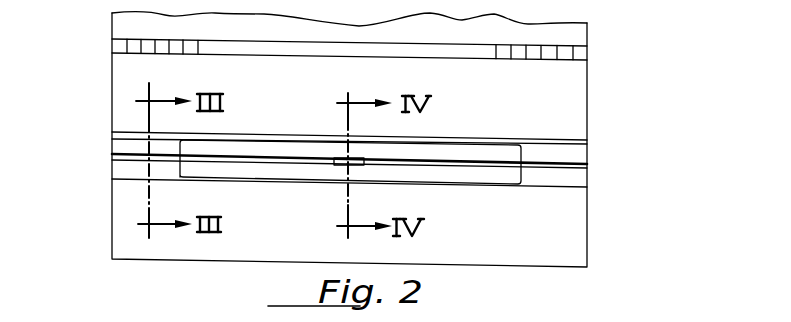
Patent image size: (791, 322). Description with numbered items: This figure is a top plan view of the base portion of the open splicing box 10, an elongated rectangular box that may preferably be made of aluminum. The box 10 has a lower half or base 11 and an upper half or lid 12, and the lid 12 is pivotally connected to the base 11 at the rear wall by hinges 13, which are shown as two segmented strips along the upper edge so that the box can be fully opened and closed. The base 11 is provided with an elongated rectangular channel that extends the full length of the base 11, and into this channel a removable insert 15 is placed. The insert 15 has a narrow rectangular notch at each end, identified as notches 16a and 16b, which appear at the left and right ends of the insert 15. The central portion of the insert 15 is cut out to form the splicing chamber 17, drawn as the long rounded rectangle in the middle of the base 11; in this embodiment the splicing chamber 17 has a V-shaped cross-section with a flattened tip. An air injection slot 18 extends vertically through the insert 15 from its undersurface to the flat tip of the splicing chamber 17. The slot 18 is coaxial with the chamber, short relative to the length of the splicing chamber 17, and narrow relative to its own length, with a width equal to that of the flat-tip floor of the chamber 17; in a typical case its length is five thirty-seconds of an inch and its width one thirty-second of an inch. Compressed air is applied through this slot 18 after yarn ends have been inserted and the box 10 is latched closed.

The box 10 is at (108, 222).
The base 11 is at (573, 246).
The lid 12 is at (568, 31).
The hinges 13 is at (118, 44).
The removable insert 15 is at (112, 147).
The narrow rectangular notch 16a is at (130, 158).
The narrow rectangular notch 16b is at (580, 165).
The splicing chamber 17 is at (249, 170).
The air injection slot 18 is at (345, 157).